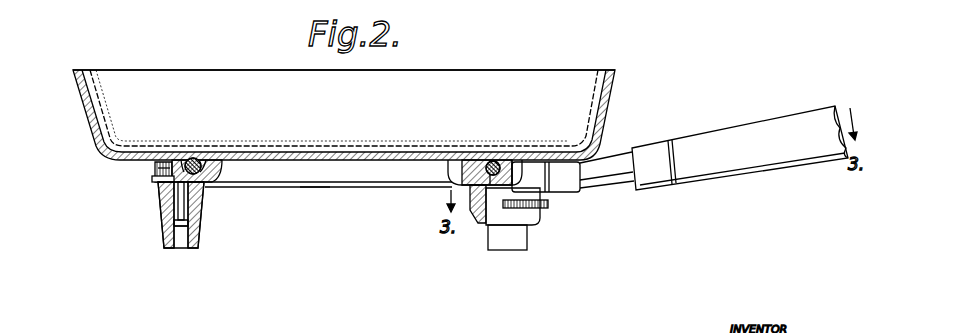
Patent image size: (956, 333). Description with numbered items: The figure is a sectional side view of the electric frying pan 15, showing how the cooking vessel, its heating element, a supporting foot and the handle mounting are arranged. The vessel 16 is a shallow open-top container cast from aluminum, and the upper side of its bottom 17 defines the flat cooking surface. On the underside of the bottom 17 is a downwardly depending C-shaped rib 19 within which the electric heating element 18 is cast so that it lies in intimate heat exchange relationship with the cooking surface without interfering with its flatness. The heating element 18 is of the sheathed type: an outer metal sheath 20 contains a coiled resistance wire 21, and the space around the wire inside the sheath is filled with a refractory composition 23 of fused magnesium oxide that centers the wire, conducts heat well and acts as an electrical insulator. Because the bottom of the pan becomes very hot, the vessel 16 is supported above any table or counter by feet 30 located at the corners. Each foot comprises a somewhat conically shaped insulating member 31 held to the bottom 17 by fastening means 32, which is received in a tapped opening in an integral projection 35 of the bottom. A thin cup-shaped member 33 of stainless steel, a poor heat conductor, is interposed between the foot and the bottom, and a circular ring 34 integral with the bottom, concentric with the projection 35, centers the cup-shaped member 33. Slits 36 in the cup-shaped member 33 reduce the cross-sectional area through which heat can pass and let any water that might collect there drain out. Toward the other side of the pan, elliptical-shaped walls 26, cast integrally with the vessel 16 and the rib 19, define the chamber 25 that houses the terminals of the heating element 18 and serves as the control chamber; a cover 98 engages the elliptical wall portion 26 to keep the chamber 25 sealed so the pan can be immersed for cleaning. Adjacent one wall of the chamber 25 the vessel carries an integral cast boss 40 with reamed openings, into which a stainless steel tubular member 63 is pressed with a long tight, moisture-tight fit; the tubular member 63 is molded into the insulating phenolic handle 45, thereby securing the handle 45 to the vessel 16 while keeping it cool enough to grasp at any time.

The electric frying pan 15 is at (362, 214).
The vessel 16 is at (482, 80).
The bottom 17 is at (334, 156).
The electric heating element 18 is at (195, 158).
The C-shaped rib 19 is at (325, 178).
The sheath 20 is at (206, 158).
The coiled resistance wire 21 is at (190, 165).
The refractory composition 23 is at (215, 170).
The chamber 25 is at (480, 210).
The elliptical-shaped walls 26 is at (452, 162).
The feet 30 is at (206, 203).
The insulating member 31 is at (199, 230).
The fastening means 32 is at (160, 212).
The cup-shaped member 33 is at (160, 172).
The ring 34 is at (152, 163).
The projection 35 is at (178, 194).
The slits 36 is at (170, 180).
The boss 40 is at (568, 185).
The handle 45 is at (723, 170).
The tubular member 63 is at (612, 180).
The cover 98 is at (541, 212).